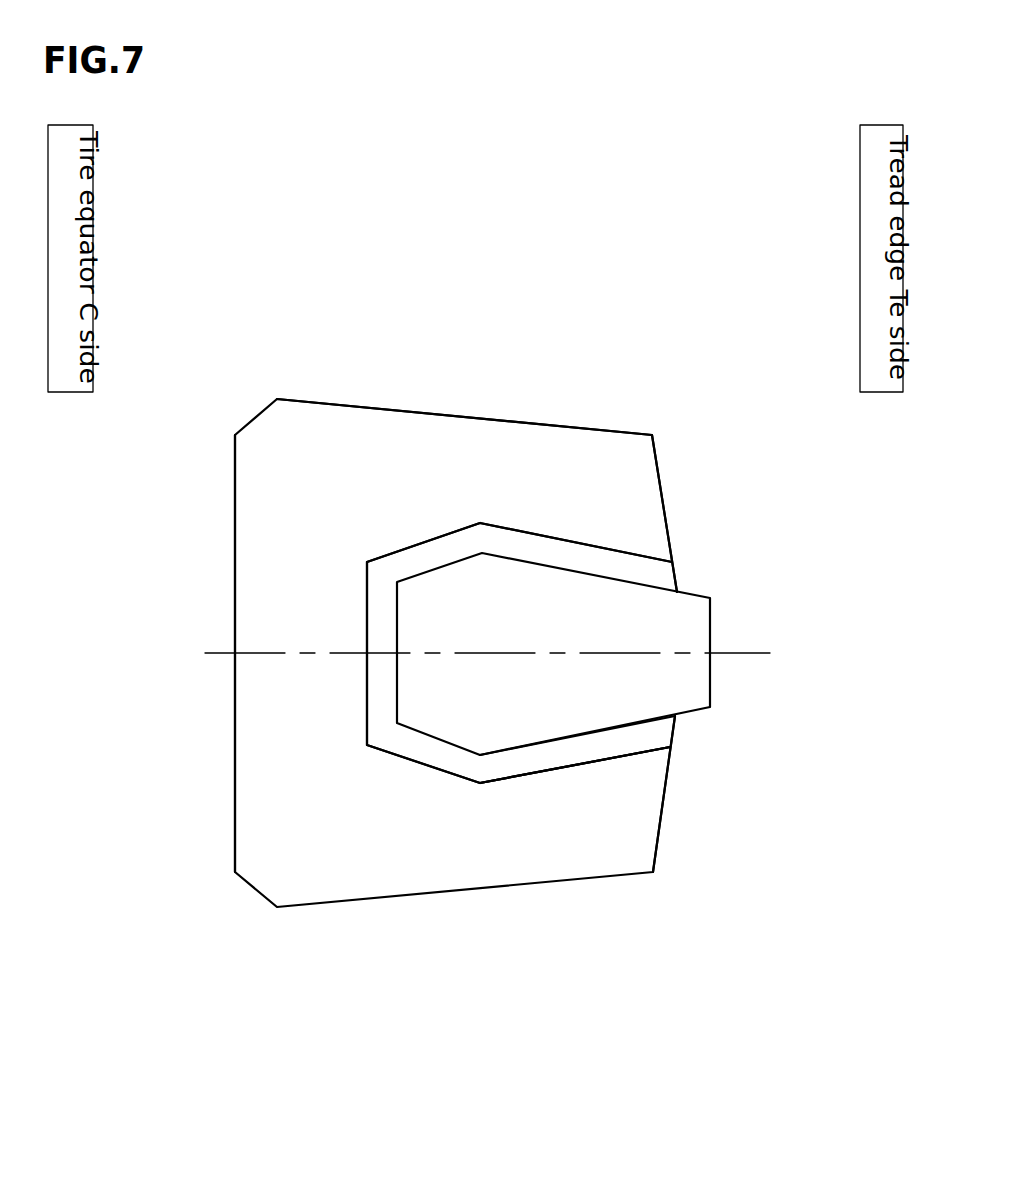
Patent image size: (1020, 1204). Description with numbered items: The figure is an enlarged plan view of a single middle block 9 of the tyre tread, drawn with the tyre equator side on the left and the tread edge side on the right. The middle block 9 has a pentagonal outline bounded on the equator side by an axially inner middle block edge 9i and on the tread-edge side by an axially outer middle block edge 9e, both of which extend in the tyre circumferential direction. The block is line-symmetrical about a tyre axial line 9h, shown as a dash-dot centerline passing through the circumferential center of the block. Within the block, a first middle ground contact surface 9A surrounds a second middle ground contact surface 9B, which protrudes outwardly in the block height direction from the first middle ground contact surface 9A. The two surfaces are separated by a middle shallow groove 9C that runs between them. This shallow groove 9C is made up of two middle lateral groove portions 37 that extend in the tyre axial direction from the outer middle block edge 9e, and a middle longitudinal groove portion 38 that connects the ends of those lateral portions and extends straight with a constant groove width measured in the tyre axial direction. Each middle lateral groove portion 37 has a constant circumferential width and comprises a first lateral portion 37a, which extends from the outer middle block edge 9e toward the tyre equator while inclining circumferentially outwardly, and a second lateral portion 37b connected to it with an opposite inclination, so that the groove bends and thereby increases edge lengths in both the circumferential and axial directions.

The middle block 9 is at (687, 331).
The first middle ground contact surface 9A is at (443, 470).
The second middle ground contact surface 9B is at (603, 625).
The middle shallow groove 9C is at (593, 747).
The tyre axial line 9h is at (742, 652).
The axially inner middle block edge 9i is at (235, 773).
The axially outer middle block edge 9e is at (660, 833).
The middle lateral groove portion 37 is at (573, 557).
The first lateral portion 37a is at (533, 762).
The second lateral portion 37b is at (433, 752).
The middle longitudinal groove portion 38 is at (382, 622).